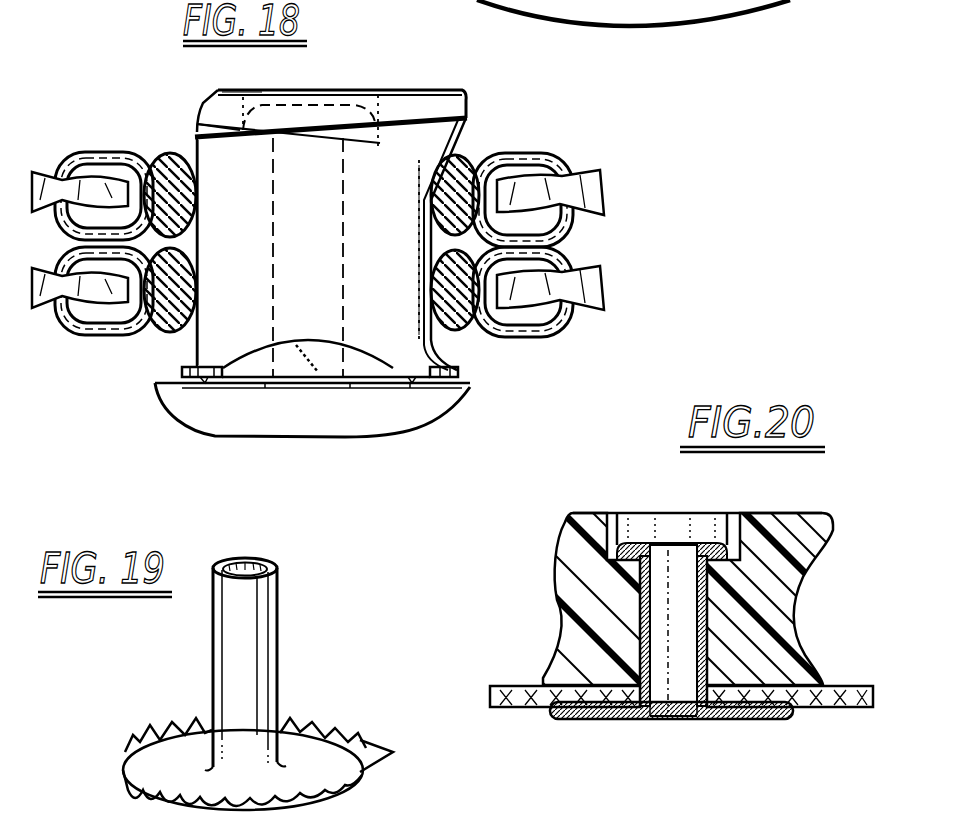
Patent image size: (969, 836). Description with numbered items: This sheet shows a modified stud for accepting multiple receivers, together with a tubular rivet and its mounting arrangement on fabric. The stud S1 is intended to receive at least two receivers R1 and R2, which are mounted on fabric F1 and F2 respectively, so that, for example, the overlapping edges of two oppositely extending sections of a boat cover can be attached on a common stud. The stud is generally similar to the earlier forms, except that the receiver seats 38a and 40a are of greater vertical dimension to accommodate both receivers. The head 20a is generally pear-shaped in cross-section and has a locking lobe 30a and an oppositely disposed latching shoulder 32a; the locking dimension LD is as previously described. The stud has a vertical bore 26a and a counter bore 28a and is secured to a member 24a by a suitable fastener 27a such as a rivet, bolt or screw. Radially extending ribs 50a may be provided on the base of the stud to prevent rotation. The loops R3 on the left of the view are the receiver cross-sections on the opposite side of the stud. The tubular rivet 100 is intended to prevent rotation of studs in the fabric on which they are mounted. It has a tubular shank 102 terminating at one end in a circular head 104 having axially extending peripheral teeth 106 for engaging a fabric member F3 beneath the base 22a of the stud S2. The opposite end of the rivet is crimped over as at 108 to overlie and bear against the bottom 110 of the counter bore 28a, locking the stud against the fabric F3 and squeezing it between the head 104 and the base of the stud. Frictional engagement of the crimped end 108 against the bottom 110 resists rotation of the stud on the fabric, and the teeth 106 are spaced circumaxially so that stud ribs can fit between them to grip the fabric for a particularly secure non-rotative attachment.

In FIG. 18, the head 20a is at (402, 93).
In FIG. 18, the member 24a is at (362, 432).
In FIG. 18, the vertical bore 26a is at (342, 318).
In FIG. 18, the fastener 27a is at (300, 100).
In FIG. 18, the counter bore 28a is at (262, 90).
In FIG. 20, the counter bore 28a is at (613, 513).
In FIG. 18, the locking lobe 30a is at (466, 108).
In FIG. 18, the latching shoulder 32a is at (197, 135).
In FIG. 18, the receiver seat 38a is at (427, 254).
In FIG. 18, the receiver seat 40a is at (208, 252).
In FIG. 18, the radially extending ribs 50a is at (200, 400).
In FIG. 18, the locking dimension LD is at (340, 143).
In FIG. 18, the stud S1 is at (205, 320).
In FIG. 20, the stud S2 is at (568, 585).
In FIG. 18, the receiver R1 is at (528, 340).
In FIG. 18, the receiver R2 is at (522, 150).
In FIG. 18, the ring R3 is at (92, 243).
In FIG. 18, the fabric F1 is at (605, 285).
In FIG. 18, the fabric F2 is at (605, 198).
In FIG. 20, the fabric member F3 is at (848, 685).
In FIG. 19, the tubular rivet 100 is at (279, 584).
In FIG. 19, the tubular shank 102 is at (255, 635).
In FIG. 19, the circular head 104 is at (305, 738).
In FIG. 20, the circular head 104 is at (622, 720).
In FIG. 19, the peripheral teeth 106 is at (365, 765).
In FIG. 20, the crimped end 108 is at (628, 556).
In FIG. 20, the bottom of the counter bore 110 is at (737, 513).
In FIG. 20, the base 22a is at (577, 720).